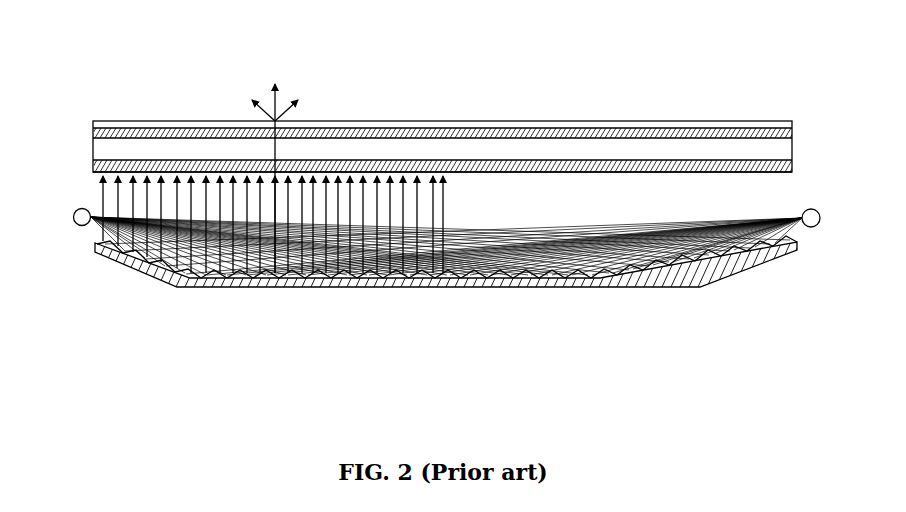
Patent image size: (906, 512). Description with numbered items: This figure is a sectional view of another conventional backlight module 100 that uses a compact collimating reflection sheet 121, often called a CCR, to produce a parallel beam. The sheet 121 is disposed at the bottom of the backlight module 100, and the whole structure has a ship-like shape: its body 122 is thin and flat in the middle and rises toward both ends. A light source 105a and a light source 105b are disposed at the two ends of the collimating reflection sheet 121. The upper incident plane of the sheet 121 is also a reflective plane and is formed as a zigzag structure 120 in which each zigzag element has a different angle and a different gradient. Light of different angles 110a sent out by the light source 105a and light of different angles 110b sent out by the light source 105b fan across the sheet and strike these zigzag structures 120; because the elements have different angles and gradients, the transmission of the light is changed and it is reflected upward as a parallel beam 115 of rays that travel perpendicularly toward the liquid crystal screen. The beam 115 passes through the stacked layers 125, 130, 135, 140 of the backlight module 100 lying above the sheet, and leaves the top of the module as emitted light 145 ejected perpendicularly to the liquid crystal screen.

The backlight module 100 is at (681, 86).
The light source 105a is at (805, 210).
The light source 105b is at (76, 224).
The light of different angles 110a is at (667, 224).
The light of different angles 110b is at (100, 238).
The parallel beam 115 is at (446, 207).
The zigzag structure 120 is at (647, 267).
The compact collimating reflection sheet 121 is at (800, 238).
The reflection sheet body 122 is at (697, 278).
The diffuser layer 125 is at (793, 166).
The light guide layer 130 is at (793, 150).
The prism/brightness enhancement layer 135 is at (793, 137).
The top optical layer 140 is at (790, 121).
The emitted light 145 is at (284, 93).